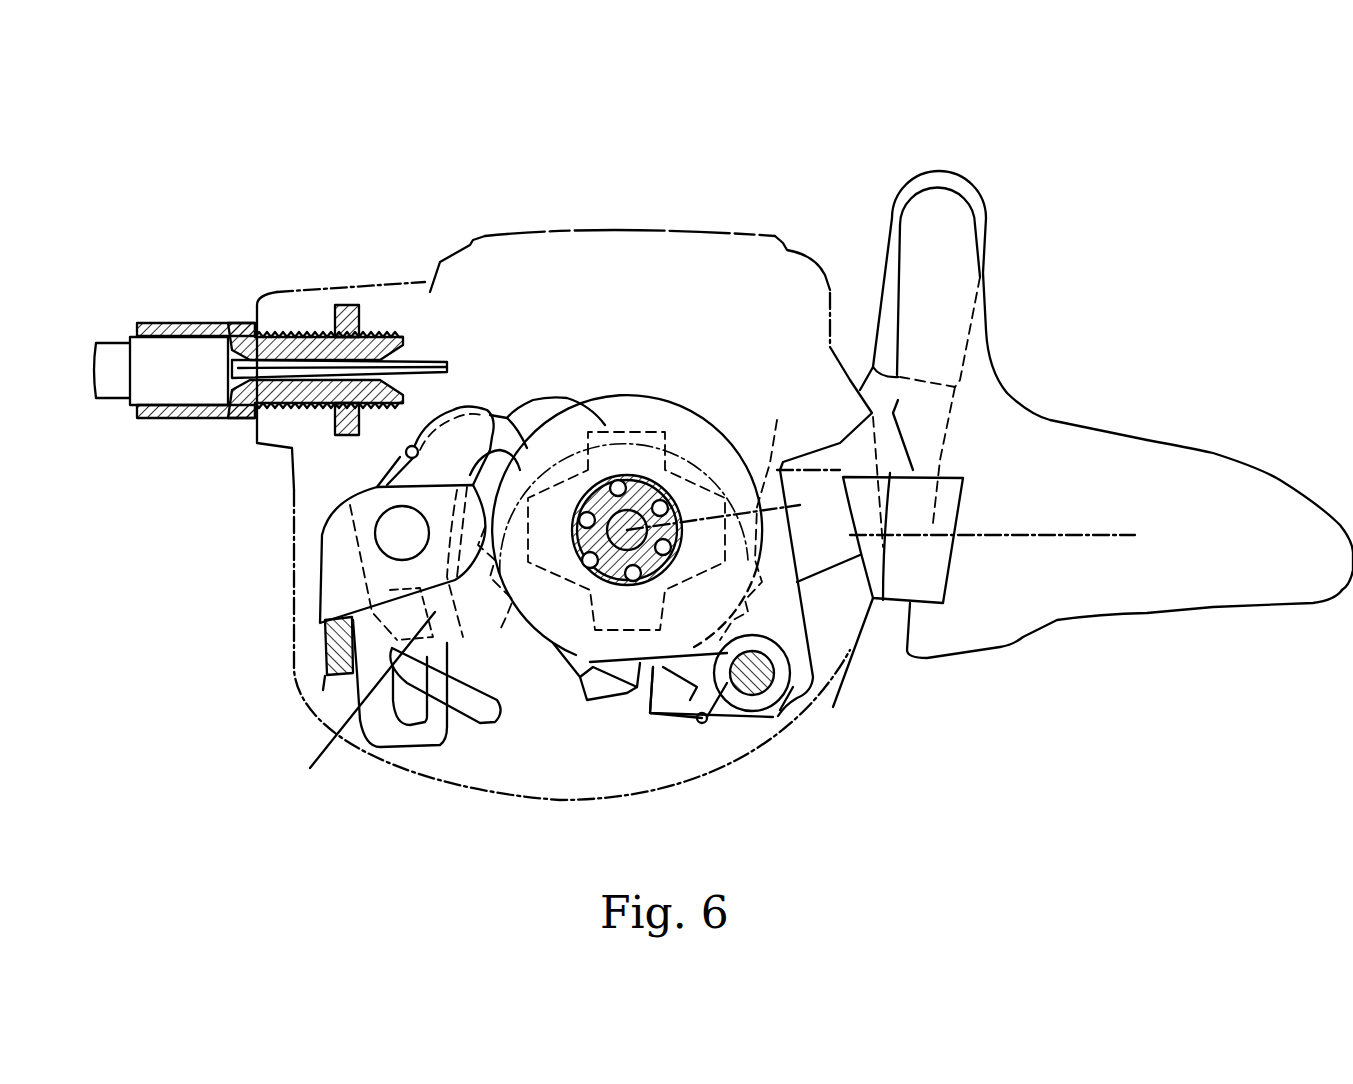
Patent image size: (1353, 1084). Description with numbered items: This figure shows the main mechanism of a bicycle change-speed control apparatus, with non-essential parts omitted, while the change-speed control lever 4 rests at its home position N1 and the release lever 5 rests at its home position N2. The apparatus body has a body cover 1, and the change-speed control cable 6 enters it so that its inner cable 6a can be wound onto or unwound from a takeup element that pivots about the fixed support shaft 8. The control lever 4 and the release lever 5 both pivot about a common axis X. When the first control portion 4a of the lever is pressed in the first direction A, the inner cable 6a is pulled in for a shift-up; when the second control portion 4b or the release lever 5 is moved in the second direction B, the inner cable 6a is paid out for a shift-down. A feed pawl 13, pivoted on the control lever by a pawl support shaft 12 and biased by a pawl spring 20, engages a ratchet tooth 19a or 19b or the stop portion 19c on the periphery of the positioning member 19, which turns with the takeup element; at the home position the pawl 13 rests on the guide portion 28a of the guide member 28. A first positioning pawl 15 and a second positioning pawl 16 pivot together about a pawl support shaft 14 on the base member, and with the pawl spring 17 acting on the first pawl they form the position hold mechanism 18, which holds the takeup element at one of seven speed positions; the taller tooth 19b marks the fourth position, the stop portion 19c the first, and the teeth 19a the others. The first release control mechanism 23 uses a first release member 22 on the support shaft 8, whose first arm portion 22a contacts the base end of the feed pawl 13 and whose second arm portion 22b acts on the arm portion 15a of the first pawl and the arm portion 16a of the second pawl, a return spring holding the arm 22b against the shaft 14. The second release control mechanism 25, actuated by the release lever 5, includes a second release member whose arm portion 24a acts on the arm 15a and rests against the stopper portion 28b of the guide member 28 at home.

The body cover 1 is at (557, 797).
The change-speed control lever 4 is at (990, 655).
The first control portion 4a is at (1255, 478).
The second control portion 4b is at (987, 313).
The release lever 5 is at (987, 235).
The change-speed control cable 6 is at (118, 402).
The inner cable 6a is at (268, 368).
The support shaft 8 is at (647, 485).
The pawl support shaft 12 is at (764, 697).
The feed pawl 13 is at (658, 714).
The pawl support shaft 14 is at (397, 535).
The first positioning pawl 15 is at (497, 416).
The arm portion 15a is at (415, 745).
The second positioning pawl 16 is at (462, 420).
The arm portion 16a is at (483, 718).
The pawl spring 17 is at (406, 452).
The position hold mechanism 18 is at (440, 400).
The positioning member 19 is at (629, 420).
The ratchet tooth 19a is at (763, 462).
The ratchet tooth 19b is at (516, 614).
The stop portion 19c is at (522, 402).
The pawl spring 20 is at (707, 723).
The first release member 22 is at (564, 420).
The first arm portion 22a is at (833, 707).
The second arm portion 22b is at (355, 690).
The first release control mechanism 23 is at (390, 621).
The arm portion 24a is at (337, 641).
The second release control mechanism 25 is at (327, 683).
The guide member 28 is at (687, 435).
The guide portion 28a is at (677, 703).
The stopper portion 28b is at (343, 502).
The common axis X is at (725, 507).
The home position N1 is at (1018, 535).
The home position N2 is at (944, 184).
The first direction A is at (1157, 558).
The second direction B is at (1157, 512).